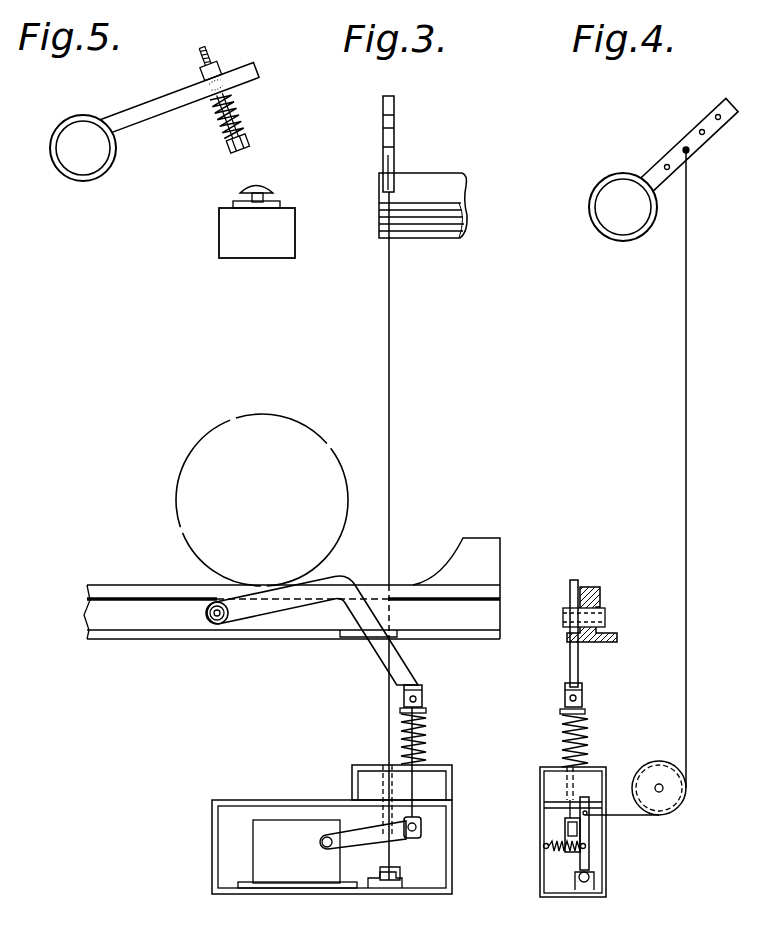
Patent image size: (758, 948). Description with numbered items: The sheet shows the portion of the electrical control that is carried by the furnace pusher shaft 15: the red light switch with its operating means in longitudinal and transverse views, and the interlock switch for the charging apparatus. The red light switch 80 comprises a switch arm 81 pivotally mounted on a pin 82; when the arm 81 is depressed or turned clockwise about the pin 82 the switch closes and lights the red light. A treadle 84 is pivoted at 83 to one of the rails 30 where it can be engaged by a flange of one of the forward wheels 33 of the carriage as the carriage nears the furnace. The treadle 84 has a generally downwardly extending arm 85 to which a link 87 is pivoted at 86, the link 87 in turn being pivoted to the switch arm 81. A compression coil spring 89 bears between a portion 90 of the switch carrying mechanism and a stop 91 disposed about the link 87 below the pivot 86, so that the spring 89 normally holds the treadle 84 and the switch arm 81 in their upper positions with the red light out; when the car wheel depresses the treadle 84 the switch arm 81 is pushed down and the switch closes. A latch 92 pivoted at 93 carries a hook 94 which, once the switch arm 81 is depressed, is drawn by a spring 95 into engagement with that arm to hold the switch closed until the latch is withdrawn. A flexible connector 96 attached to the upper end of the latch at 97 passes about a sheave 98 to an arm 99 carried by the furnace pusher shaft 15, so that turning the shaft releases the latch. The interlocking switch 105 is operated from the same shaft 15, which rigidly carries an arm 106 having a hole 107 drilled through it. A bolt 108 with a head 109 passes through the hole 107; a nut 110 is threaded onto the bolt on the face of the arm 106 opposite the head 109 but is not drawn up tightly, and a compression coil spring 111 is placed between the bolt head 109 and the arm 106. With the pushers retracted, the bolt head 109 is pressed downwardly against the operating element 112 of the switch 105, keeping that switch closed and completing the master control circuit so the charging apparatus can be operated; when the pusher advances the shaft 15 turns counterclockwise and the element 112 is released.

In FIG. 5, the furnace pusher shaft 15 is at (72, 183).
In FIG. 3, the furnace pusher shaft 15 is at (437, 182).
In FIG. 4, the furnace pusher shaft 15 is at (610, 177).
In FIG. 3, the rail 30 is at (118, 590).
In FIG. 4, the rail 30 is at (600, 590).
In FIG. 3, the forward wheel 33 is at (183, 469).
In FIG. 3, the red light switch 80 is at (272, 825).
In FIG. 3, the switch arm 81 is at (355, 835).
In FIG. 4, the switch arm 81 is at (565, 830).
In FIG. 3, the pin 82 is at (322, 845).
In FIG. 3, the treadle pivot 83 is at (205, 620).
In FIG. 3, the treadle 84 is at (340, 578).
In FIG. 3, the arm 85 is at (372, 645).
In FIG. 4, the arm 85 is at (570, 660).
In FIG. 3, the pivot 86 is at (422, 697).
In FIG. 4, the pivot 86 is at (565, 700).
In FIG. 3, the link 87 is at (413, 786).
In FIG. 3, the compression coil spring 89 is at (427, 736).
In FIG. 4, the compression coil spring 89 is at (588, 725).
In FIG. 3, the portion of the switch carrying mechanism 90 is at (368, 765).
In FIG. 4, the portion of the switch carrying mechanism 90 is at (556, 767).
In FIG. 3, the stop 91 is at (427, 711).
In FIG. 4, the stop 91 is at (585, 712).
In FIG. 3, the latch 92 is at (393, 850).
In FIG. 4, the latch 92 is at (590, 862).
In FIG. 3, the latch pivot 93 is at (400, 877).
In FIG. 4, the latch pivot 93 is at (588, 878).
In FIG. 4, the hook 94 is at (592, 838).
In FIG. 4, the spring 95 is at (552, 855).
In FIG. 3, the flexible connector 96 is at (391, 386).
In FIG. 4, the flexible connector 96 is at (688, 387).
In FIG. 4, the connection point 97 is at (590, 815).
In FIG. 4, the sheave 98 is at (675, 788).
In FIG. 3, the arm 99 is at (397, 116).
In FIG. 4, the arm 99 is at (697, 133).
In FIG. 5, the interlocking switch 105 is at (230, 230).
In FIG. 5, the arm 106 is at (163, 119).
In FIG. 5, the hole 107 is at (236, 82).
In FIG. 5, the bolt 108 is at (210, 50).
In FIG. 5, the bolt head 109 is at (262, 143).
In FIG. 5, the nut 110 is at (228, 68).
In FIG. 5, the compression coil spring 111 is at (250, 114).
In FIG. 5, the operating element 112 is at (248, 187).